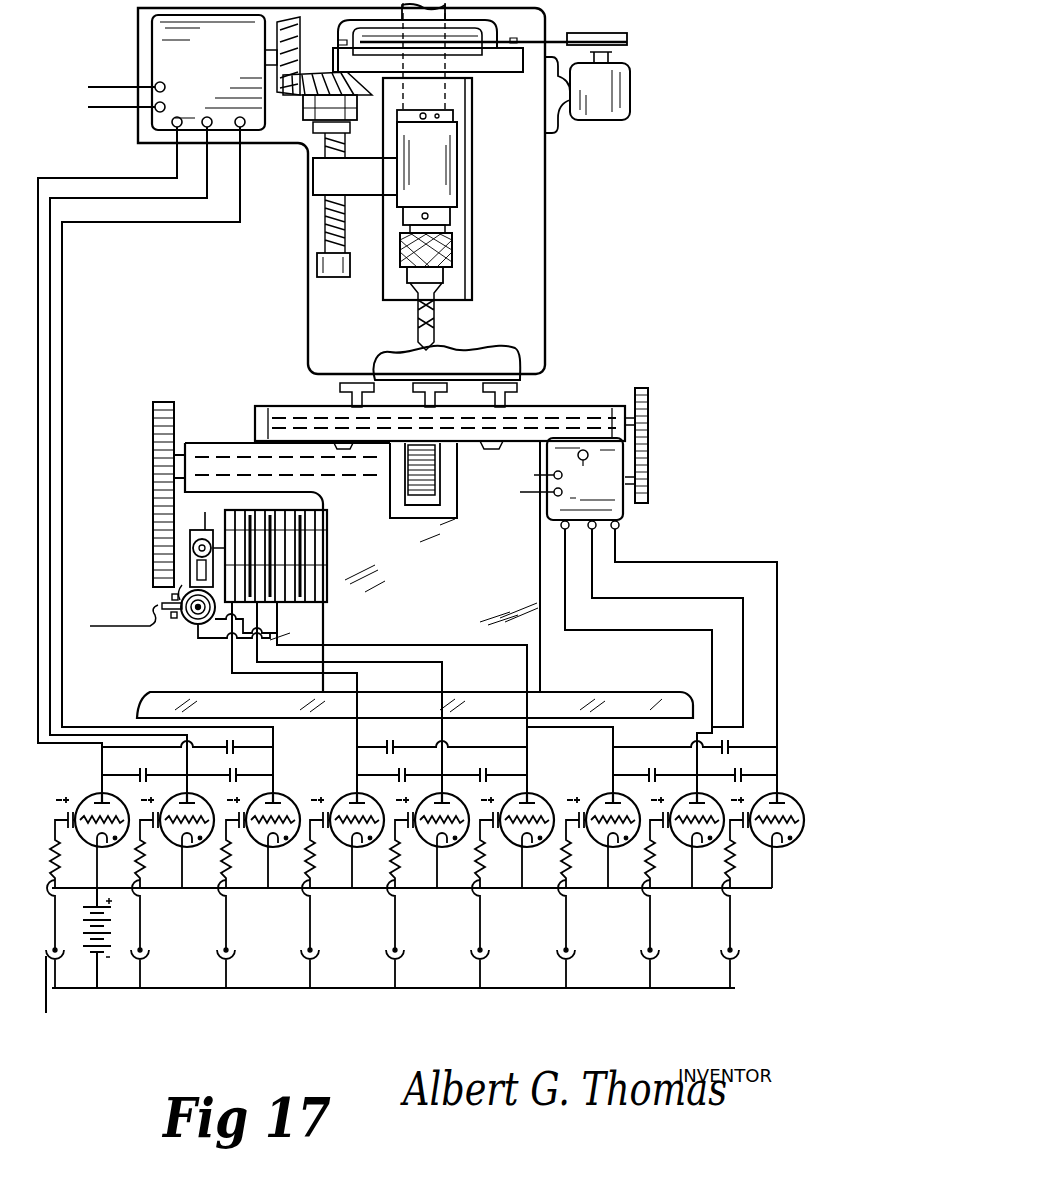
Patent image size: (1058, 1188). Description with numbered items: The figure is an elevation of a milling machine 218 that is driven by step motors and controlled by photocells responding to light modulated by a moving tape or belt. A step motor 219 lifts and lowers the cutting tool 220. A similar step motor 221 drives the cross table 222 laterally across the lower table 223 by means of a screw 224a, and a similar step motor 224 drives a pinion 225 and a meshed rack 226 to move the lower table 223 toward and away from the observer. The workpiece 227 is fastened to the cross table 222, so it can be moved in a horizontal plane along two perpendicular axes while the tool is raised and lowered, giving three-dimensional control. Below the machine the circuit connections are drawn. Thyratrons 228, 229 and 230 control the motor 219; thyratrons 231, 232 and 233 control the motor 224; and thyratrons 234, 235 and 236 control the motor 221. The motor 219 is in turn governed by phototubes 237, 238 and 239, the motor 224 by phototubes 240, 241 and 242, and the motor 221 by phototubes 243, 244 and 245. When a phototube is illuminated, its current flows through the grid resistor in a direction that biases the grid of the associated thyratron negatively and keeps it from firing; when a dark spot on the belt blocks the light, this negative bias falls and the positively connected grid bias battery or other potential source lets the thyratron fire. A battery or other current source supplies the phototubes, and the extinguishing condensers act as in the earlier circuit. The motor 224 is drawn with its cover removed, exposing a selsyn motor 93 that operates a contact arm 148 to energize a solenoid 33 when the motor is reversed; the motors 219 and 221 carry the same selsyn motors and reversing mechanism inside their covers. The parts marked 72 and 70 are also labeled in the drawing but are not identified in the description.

The milling machine 218 is at (545, 165).
The step motor 219 is at (153, 35).
The cutting tool 220 is at (477, 300).
The step motor 221 is at (625, 515).
The cross table 222 is at (545, 403).
The lower table 223 is at (578, 404).
The step motor 224 is at (303, 575).
The screw 224a is at (305, 425).
The pinion 225 is at (427, 493).
The rack 226 is at (433, 450).
The workpiece 227 is at (377, 358).
The thyratron 228 is at (93, 795).
The thyratron 229 is at (178, 840).
The thyratron 230 is at (283, 790).
The thyratron 231 is at (355, 792).
The thyratron 232 is at (429, 840).
The thyratron 233 is at (530, 789).
The thyratron 234 is at (613, 791).
The thyratron 235 is at (684, 840).
The thyratron 236 is at (785, 788).
The phototube 237 is at (105, 948).
The phototube 238 is at (150, 962).
The phototube 239 is at (240, 963).
The phototube 240 is at (318, 952).
The phototube 241 is at (382, 960).
The phototube 242 is at (470, 961).
The phototube 243 is at (553, 959).
The phototube 244 is at (635, 957).
The phototube 245 is at (721, 958).
The solenoid 33 is at (190, 541).
The control switch 72 is at (558, 473).
The selsyn motor 93 is at (190, 622).
The contact arm 148 is at (167, 601).
The conductor bus 70 is at (746, 890).